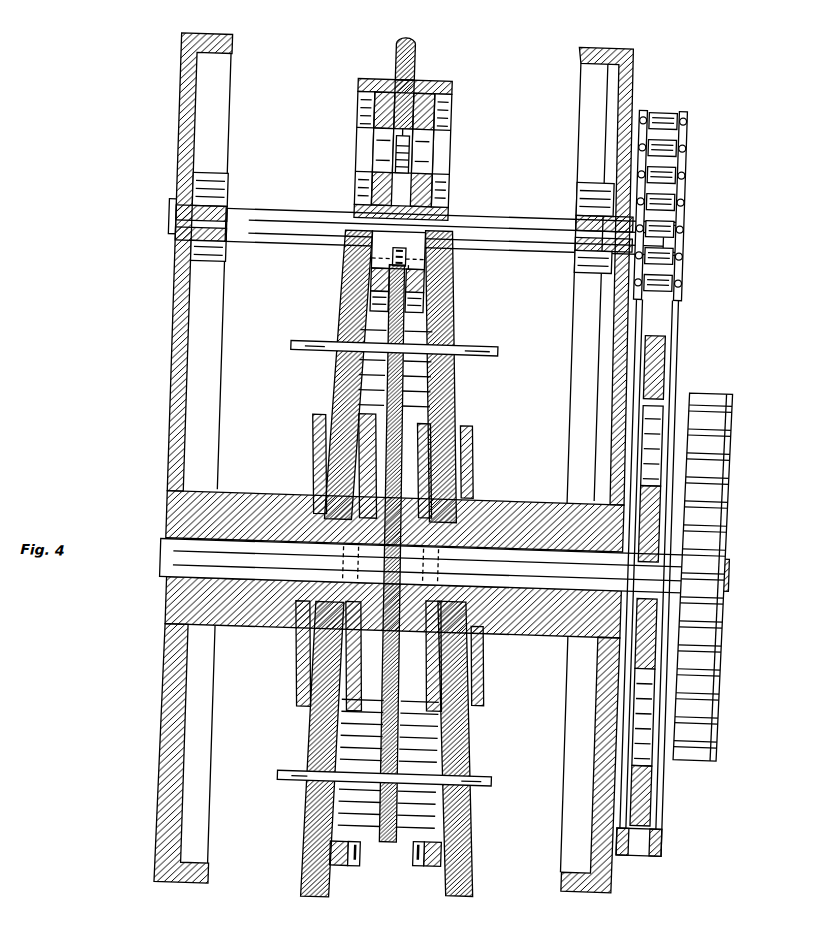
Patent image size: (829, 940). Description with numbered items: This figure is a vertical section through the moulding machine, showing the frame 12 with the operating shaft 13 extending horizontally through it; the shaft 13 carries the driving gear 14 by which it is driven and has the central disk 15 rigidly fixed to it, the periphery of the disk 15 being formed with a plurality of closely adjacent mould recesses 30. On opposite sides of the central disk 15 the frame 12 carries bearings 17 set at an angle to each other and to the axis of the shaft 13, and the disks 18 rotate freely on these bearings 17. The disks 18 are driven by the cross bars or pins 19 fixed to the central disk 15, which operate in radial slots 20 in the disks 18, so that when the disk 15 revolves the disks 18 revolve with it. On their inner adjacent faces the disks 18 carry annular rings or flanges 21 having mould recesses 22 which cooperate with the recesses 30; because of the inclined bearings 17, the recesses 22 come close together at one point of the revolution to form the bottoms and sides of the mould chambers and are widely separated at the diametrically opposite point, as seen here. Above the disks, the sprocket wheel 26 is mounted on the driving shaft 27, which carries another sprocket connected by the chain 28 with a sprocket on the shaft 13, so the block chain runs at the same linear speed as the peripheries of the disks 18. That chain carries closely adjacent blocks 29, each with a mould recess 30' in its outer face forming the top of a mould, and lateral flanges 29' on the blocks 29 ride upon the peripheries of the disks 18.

The frame 12 is at (174, 115).
The operating shaft 13 is at (168, 562).
The driving gear 14 is at (704, 387).
The central disk 15 is at (398, 400).
The bearings 17 is at (326, 505).
The disks 18 is at (339, 278).
The cross bars or pins 19 is at (294, 353).
The radial slots 20 is at (328, 793).
The annular rings or flanges 21 is at (353, 872).
The mould recesses 22 is at (364, 857).
The sprocket wheel 26 is at (395, 140).
The driving shaft 27 is at (479, 217).
The chain 28 is at (660, 192).
The blocks 29 is at (404, 128).
The lateral flanges 29' is at (401, 134).
The mould recesses 30 is at (423, 336).
The mould recess 30' is at (438, 143).